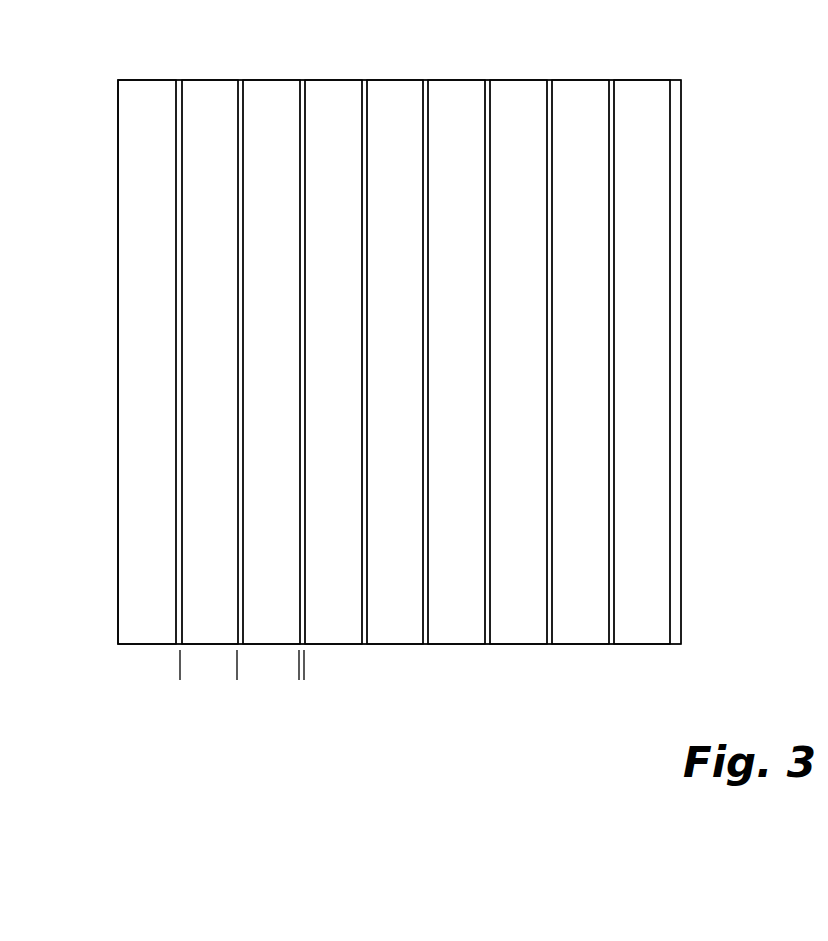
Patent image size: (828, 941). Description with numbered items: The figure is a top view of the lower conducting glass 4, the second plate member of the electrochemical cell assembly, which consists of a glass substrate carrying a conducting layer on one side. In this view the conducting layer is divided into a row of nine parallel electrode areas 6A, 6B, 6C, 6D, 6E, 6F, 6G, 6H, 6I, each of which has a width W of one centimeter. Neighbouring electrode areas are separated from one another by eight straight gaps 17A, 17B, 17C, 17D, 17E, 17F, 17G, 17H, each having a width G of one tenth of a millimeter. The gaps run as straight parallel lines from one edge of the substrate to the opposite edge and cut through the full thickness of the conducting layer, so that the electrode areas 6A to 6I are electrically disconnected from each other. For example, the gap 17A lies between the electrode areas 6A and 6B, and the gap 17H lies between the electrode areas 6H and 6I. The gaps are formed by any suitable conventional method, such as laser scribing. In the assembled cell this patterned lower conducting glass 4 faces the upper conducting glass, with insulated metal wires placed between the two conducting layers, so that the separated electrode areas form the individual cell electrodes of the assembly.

The second plate member 4 is at (63, 292).
The electrode area 6A is at (147, 638).
The electrode area 6B is at (228, 621).
The electrode area 6C is at (265, 627).
The electrode area 6D is at (335, 639).
The electrode area 6E is at (397, 640).
The electrode area 6F is at (457, 640).
The electrode area 6G is at (519, 640).
The electrode area 6H is at (577, 640).
The electrode area 6I is at (638, 640).
The straight gap 17A is at (180, 80).
The straight gap 17B is at (243, 80).
The straight gap 17C is at (302, 80).
The straight gap 17D is at (366, 80).
The straight gap 17E is at (427, 80).
The straight gap 17F is at (488, 80).
The straight gap 17G is at (550, 80).
The straight gap 17H is at (612, 80).
The width of electrode area W is at (208, 677).
The width of gap G is at (302, 677).